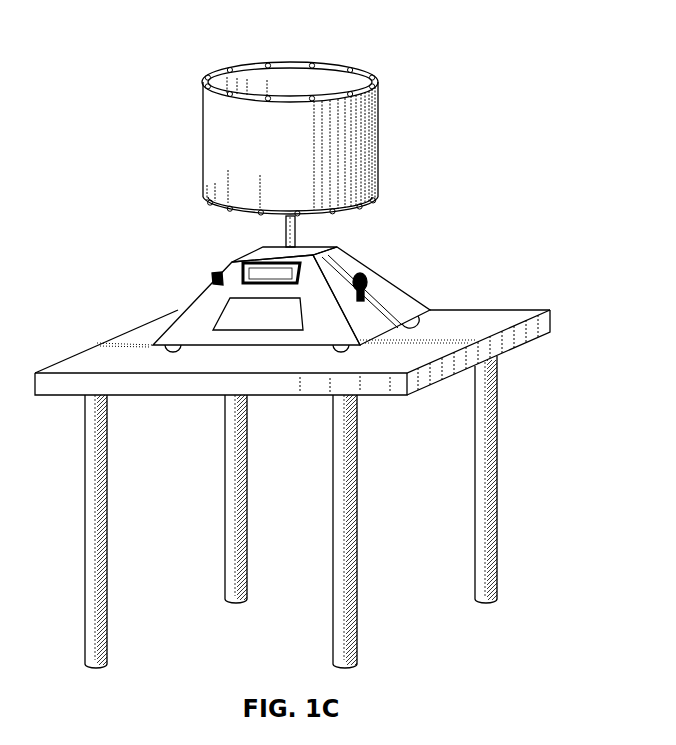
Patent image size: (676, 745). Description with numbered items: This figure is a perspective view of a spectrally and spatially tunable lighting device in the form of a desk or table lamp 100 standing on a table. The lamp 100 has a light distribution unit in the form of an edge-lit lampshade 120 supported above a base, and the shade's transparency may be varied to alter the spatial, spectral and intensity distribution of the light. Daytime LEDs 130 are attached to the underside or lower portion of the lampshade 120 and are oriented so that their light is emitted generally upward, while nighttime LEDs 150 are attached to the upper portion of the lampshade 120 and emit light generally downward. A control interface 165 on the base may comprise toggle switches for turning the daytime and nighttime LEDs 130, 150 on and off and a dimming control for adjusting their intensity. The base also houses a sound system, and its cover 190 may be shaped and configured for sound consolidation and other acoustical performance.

The desk or table lamp 100 is at (374, 56).
The edge-lit lampshade 120 is at (380, 137).
The daytime LEDs 130 is at (250, 214).
The nighttime LEDs 150 is at (276, 37).
The control interface 165 is at (220, 316).
The cover 190 is at (524, 330).